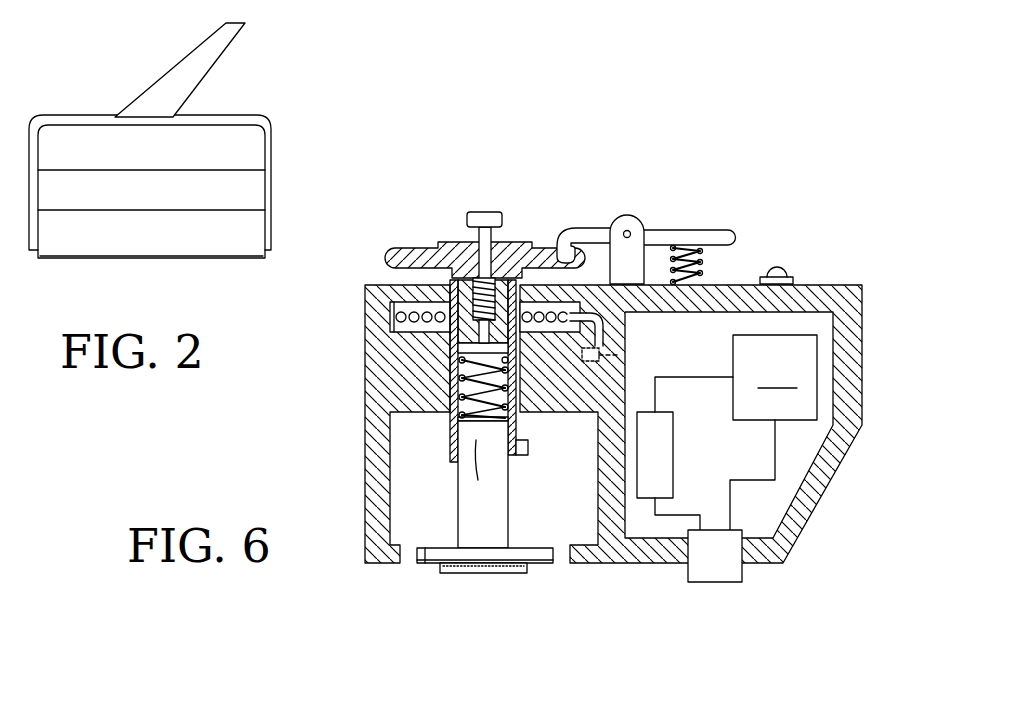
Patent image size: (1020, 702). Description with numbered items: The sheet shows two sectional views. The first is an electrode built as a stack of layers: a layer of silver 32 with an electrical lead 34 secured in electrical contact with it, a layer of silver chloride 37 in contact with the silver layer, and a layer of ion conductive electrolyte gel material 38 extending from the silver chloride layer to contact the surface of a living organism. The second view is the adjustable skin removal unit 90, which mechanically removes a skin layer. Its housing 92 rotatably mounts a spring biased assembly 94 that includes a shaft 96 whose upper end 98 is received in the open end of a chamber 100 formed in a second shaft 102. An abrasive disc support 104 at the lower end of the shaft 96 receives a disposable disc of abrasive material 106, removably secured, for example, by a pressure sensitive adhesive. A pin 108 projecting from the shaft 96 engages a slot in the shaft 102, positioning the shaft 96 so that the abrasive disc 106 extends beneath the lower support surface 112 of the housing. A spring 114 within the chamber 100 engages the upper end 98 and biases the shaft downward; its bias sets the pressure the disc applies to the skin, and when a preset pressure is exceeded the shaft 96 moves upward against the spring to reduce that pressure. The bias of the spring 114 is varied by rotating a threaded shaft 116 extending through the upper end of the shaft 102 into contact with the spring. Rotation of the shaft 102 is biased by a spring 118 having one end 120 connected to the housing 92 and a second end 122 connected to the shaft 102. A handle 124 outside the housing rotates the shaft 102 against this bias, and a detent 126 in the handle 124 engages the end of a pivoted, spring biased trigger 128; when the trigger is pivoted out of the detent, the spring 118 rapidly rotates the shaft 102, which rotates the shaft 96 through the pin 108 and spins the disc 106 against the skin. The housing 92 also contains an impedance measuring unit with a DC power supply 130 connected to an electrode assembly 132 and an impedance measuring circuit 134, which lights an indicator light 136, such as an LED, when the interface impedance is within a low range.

In FIG. 2, the layer of silver 32 is at (248, 152).
In FIG. 2, the electrical lead 34 is at (205, 55).
In FIG. 2, the layer of silver chloride 37 is at (240, 192).
In FIG. 2, the layer of ion conductive electrolyte gel material 38 is at (203, 237).
In FIG. 6, the adjustable skin removal unit 90 is at (340, 559).
In FIG. 6, the housing 92 is at (833, 283).
In FIG. 6, the spring biased assembly 94 is at (450, 447).
In FIG. 6, the shaft 96 is at (490, 523).
In FIG. 6, the upper end 98 is at (478, 432).
In FIG. 6, the chamber 100 is at (470, 345).
In FIG. 6, the second shaft 102 is at (455, 415).
In FIG. 6, the abrasive disc support 104 is at (425, 563).
In FIG. 6, the disc of abrasive material 106 is at (473, 573).
In FIG. 6, the pin 108 is at (520, 457).
In FIG. 6, the lower support surface 112 is at (612, 563).
In FIG. 6, the spring 114 is at (517, 387).
In FIG. 6, the threaded shaft 116 is at (447, 295).
In FIG. 6, the spring 118 is at (580, 295).
In FIG. 6, the one end 120 is at (620, 355).
In FIG. 6, the second end 122 is at (448, 317).
In FIG. 6, the handle 124 is at (388, 253).
In FIG. 6, the detent 126 is at (563, 247).
In FIG. 6, the trigger 128 is at (670, 227).
In FIG. 6, the DC power supply 130 is at (655, 450).
In FIG. 6, the electrode assembly 132 is at (718, 565).
In FIG. 6, the impedance measuring circuit 134 is at (736, 432).
In FIG. 6, the indicator light 136 is at (773, 273).